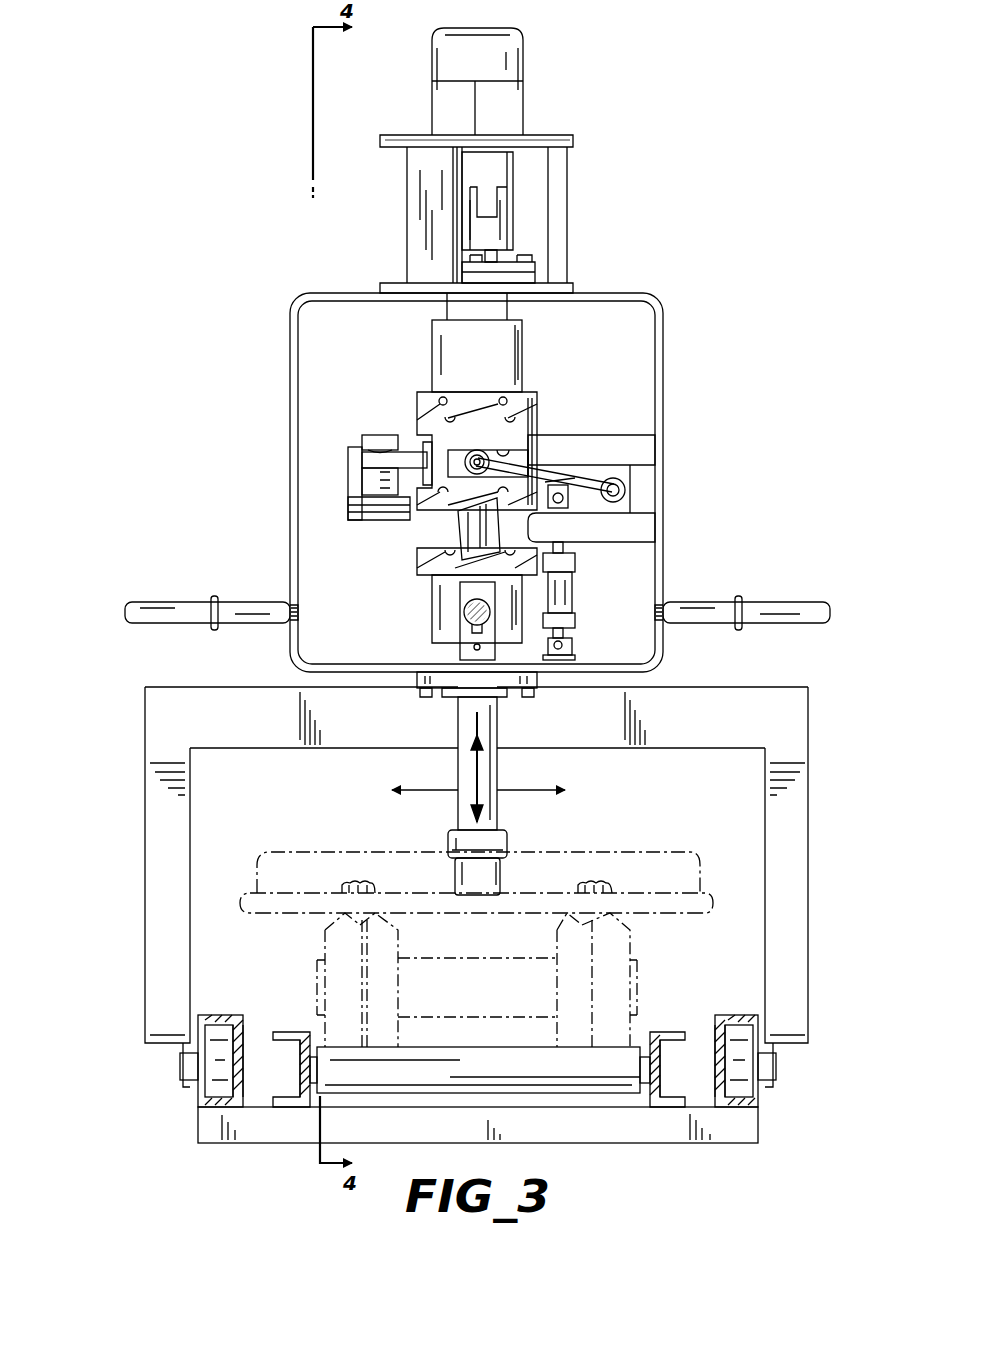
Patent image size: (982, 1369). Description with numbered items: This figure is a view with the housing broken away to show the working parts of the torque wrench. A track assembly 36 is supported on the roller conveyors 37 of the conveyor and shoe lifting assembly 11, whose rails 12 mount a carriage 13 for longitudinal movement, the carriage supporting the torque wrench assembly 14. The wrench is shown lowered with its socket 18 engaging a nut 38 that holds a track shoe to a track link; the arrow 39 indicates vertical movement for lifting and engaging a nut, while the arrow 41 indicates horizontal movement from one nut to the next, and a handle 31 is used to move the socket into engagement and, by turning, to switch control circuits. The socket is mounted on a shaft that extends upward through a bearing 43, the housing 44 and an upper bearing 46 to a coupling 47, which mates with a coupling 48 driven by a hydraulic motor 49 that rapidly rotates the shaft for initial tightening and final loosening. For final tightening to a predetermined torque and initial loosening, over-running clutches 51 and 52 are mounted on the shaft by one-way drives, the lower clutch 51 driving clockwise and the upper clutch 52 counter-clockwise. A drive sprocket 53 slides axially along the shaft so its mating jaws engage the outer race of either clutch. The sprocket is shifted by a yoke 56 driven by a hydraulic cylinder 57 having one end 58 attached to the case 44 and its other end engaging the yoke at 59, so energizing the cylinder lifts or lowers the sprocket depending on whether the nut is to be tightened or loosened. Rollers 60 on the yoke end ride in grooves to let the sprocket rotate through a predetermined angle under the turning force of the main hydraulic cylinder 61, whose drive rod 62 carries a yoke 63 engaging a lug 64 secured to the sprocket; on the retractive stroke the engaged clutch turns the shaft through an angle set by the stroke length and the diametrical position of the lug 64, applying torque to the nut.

The conveyor and shoe lifting assembly 11 is at (591, 1150).
The rails 12 is at (222, 1015).
The carriage 13 is at (170, 805).
The torque wrench assembly 14 is at (322, 270).
The socket 18 is at (507, 877).
The handle 31 is at (185, 615).
The track assembly 36 is at (615, 1007).
The roller conveyors 37 is at (360, 1063).
The nut 38 is at (380, 884).
The arrow 39 is at (498, 790).
The arrow 41 is at (425, 793).
The bearing 43 is at (448, 692).
The housing 44 is at (352, 668).
The upper bearing 46 is at (530, 274).
The coupling 47 is at (503, 232).
The coupling 48 is at (505, 168).
The hydraulic motor 49 is at (510, 66).
The over-running clutch 51 is at (447, 630).
The over-running clutch 52 is at (460, 338).
The drive sprocket 53 is at (438, 430).
The yoke 56 is at (528, 462).
The hydraulic cylinder 57 is at (560, 590).
The cylinder end 58 is at (566, 645).
The yoke engagement 59 is at (570, 494).
The rollers 60 is at (482, 452).
The main hydraulic cylinder 61 is at (346, 484).
The drive rod 62 is at (512, 452).
The yoke 63 is at (378, 440).
The lug 64 is at (380, 462).